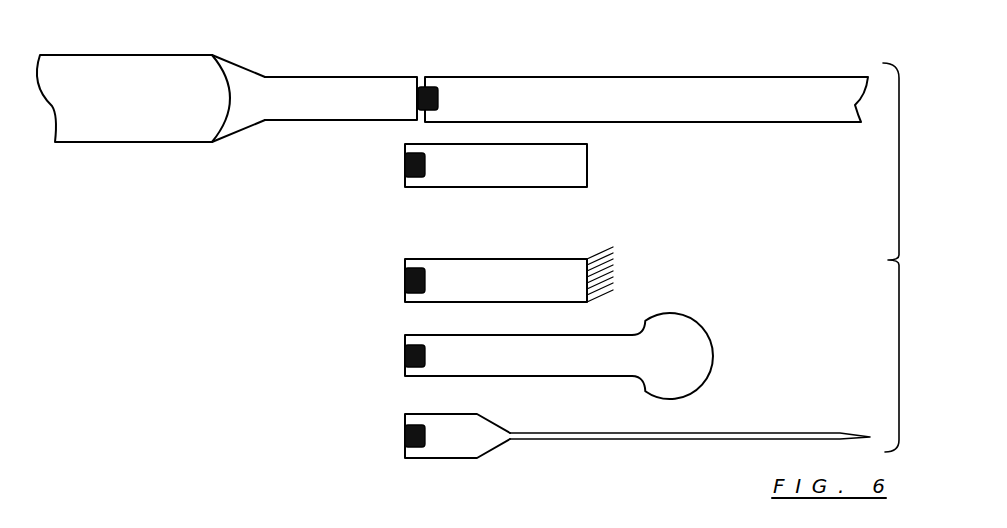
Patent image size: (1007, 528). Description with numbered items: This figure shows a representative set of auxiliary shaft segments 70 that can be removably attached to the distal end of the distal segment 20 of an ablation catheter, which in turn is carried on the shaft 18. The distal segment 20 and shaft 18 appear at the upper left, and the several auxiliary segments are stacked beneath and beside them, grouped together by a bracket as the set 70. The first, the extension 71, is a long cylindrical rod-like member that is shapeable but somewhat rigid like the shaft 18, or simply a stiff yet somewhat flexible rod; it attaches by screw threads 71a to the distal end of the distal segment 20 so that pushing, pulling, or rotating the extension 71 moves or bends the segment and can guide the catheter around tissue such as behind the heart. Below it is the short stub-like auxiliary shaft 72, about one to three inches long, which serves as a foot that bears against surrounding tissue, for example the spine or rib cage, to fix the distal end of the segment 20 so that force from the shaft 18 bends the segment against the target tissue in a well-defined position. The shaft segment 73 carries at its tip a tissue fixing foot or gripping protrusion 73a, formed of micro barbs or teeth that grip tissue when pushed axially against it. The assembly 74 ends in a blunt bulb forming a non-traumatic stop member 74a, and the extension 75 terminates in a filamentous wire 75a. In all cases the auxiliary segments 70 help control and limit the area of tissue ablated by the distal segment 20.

The shaft 18 is at (300, 122).
The distal segment 20 is at (376, 107).
The auxiliary shaft segments 70 is at (872, 257).
The extension 71 is at (718, 80).
The screw threads 71a is at (432, 90).
The short stub-like auxiliary shaft 72 is at (502, 178).
The shaft segment 73 is at (487, 267).
The tissue fixing foot or gripping protrusion 73a is at (608, 256).
The assembly 74 is at (520, 335).
The non-traumatic stop member 74a is at (703, 334).
The extension 75 is at (440, 415).
The filamentous wire 75a is at (570, 433).